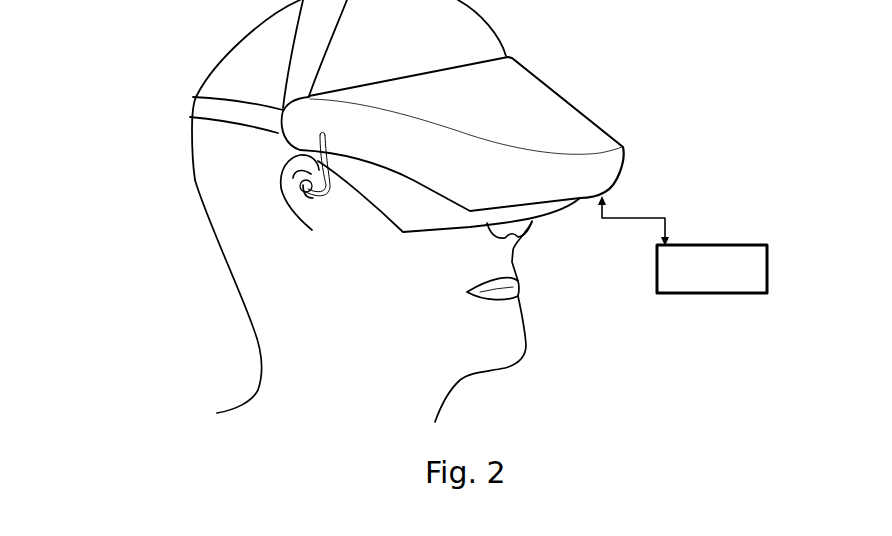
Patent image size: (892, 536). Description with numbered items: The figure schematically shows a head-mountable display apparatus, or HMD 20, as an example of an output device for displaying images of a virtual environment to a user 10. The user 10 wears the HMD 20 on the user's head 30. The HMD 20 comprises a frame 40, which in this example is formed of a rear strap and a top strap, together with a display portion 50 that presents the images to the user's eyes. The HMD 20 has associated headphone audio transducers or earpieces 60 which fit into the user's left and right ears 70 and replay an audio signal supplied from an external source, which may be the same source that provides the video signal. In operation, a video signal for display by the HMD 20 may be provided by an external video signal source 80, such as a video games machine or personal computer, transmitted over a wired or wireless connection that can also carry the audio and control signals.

The user 10 is at (168, 278).
The HMD 20 is at (585, 86).
The user's head 30 is at (193, 177).
The frame 40 is at (190, 107).
The display portion 50 is at (608, 130).
The earpieces 60 is at (323, 195).
The ears 70 is at (283, 177).
The external video signal source 80 is at (743, 243).